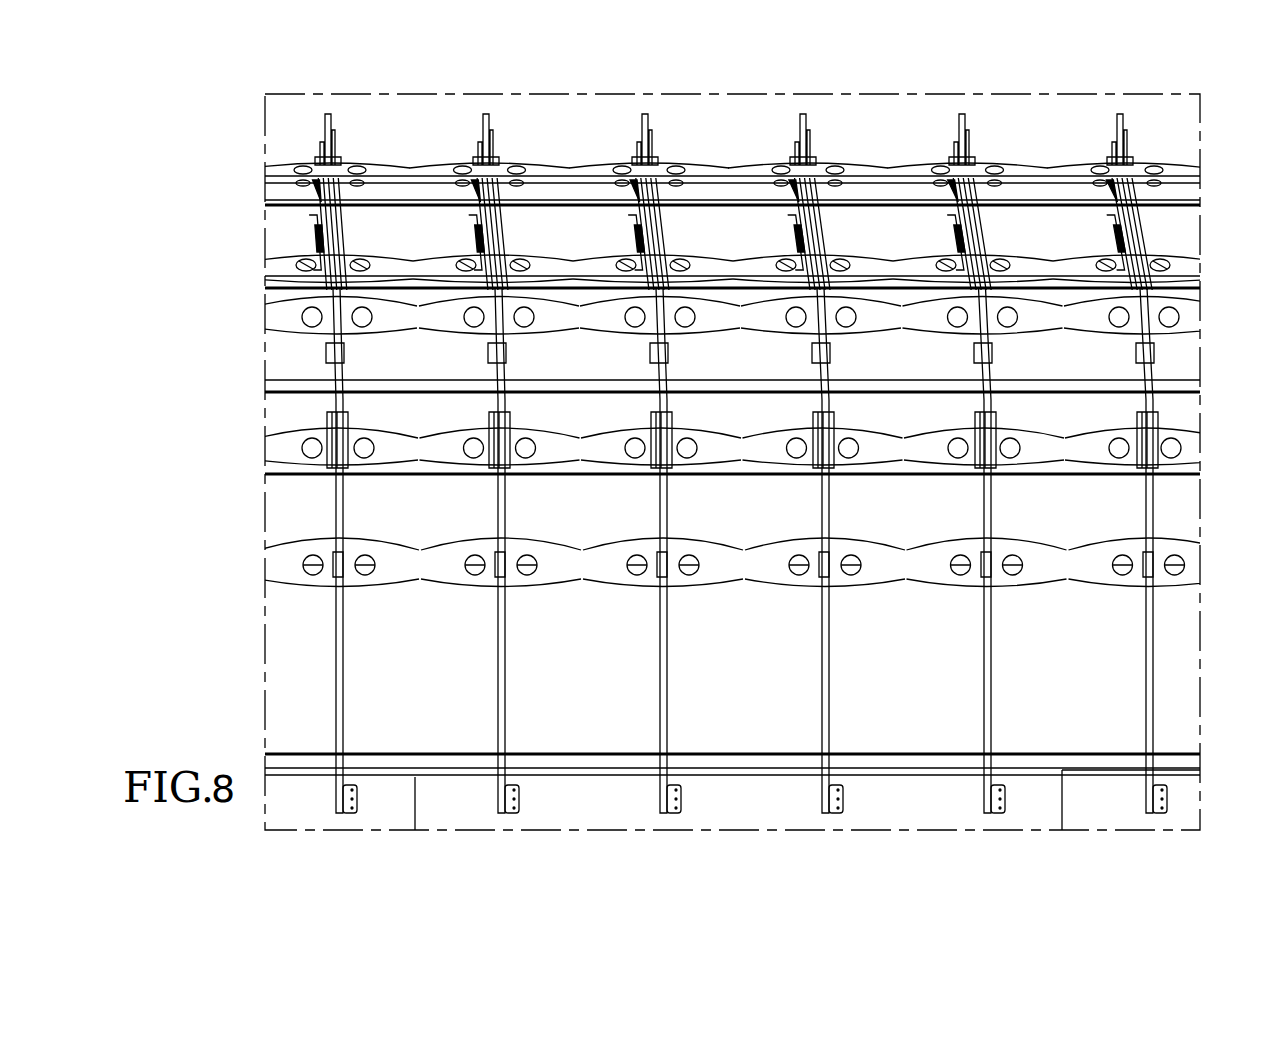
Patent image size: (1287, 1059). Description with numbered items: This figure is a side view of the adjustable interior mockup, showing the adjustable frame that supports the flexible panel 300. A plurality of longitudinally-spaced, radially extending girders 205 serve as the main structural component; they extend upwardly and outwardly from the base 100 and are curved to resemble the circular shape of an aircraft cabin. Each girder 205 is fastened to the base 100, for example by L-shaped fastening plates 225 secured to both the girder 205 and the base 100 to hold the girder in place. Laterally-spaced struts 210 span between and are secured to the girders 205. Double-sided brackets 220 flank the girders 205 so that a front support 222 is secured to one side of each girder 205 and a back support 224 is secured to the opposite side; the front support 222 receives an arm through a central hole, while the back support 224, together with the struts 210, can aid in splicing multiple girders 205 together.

The base 100 is at (927, 790).
The girder 205 is at (505, 385).
The strut 210 is at (730, 448).
The double-sided bracket 220 is at (333, 474).
The front support 222 is at (327, 427).
The back support 224 is at (380, 430).
The L-shaped fastening plate 225 is at (1157, 800).
The flexible panel 300 is at (935, 690).